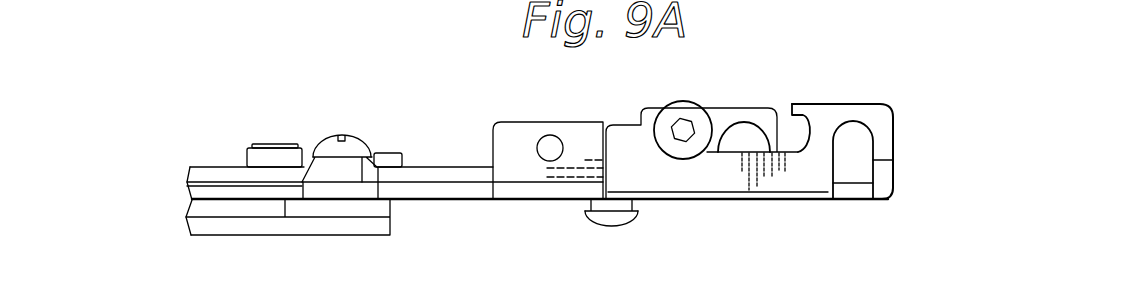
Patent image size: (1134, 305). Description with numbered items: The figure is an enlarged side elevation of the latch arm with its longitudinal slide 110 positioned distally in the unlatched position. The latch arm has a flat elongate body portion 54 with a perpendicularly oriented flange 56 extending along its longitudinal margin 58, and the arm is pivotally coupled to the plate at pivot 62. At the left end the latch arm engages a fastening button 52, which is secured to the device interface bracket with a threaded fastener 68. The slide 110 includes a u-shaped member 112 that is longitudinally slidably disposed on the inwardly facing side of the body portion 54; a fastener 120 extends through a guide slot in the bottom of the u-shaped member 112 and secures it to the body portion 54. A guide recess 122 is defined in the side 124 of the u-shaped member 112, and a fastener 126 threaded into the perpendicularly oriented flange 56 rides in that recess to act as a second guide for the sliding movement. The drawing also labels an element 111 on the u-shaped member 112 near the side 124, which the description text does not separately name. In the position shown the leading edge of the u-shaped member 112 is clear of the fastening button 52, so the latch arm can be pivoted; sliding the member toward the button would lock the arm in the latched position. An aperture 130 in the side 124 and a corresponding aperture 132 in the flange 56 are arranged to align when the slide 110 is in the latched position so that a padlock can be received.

The fastening button 52 is at (330, 172).
The flat elongate body portion 54 is at (488, 192).
The perpendicularly oriented flange 56 is at (583, 135).
The longitudinal margin 58 is at (558, 168).
The pivot 62 is at (283, 143).
The threaded fastener 68 is at (357, 138).
The longitudinal slide 110 is at (768, 200).
The arched slot 111 is at (858, 123).
The u-shaped member 112 is at (895, 117).
The fastener 120 is at (613, 220).
The guide recess 122 is at (798, 150).
The side 124 is at (815, 170).
The fastener 126 is at (683, 113).
The aperture 130 is at (873, 160).
The aperture 132 is at (747, 122).